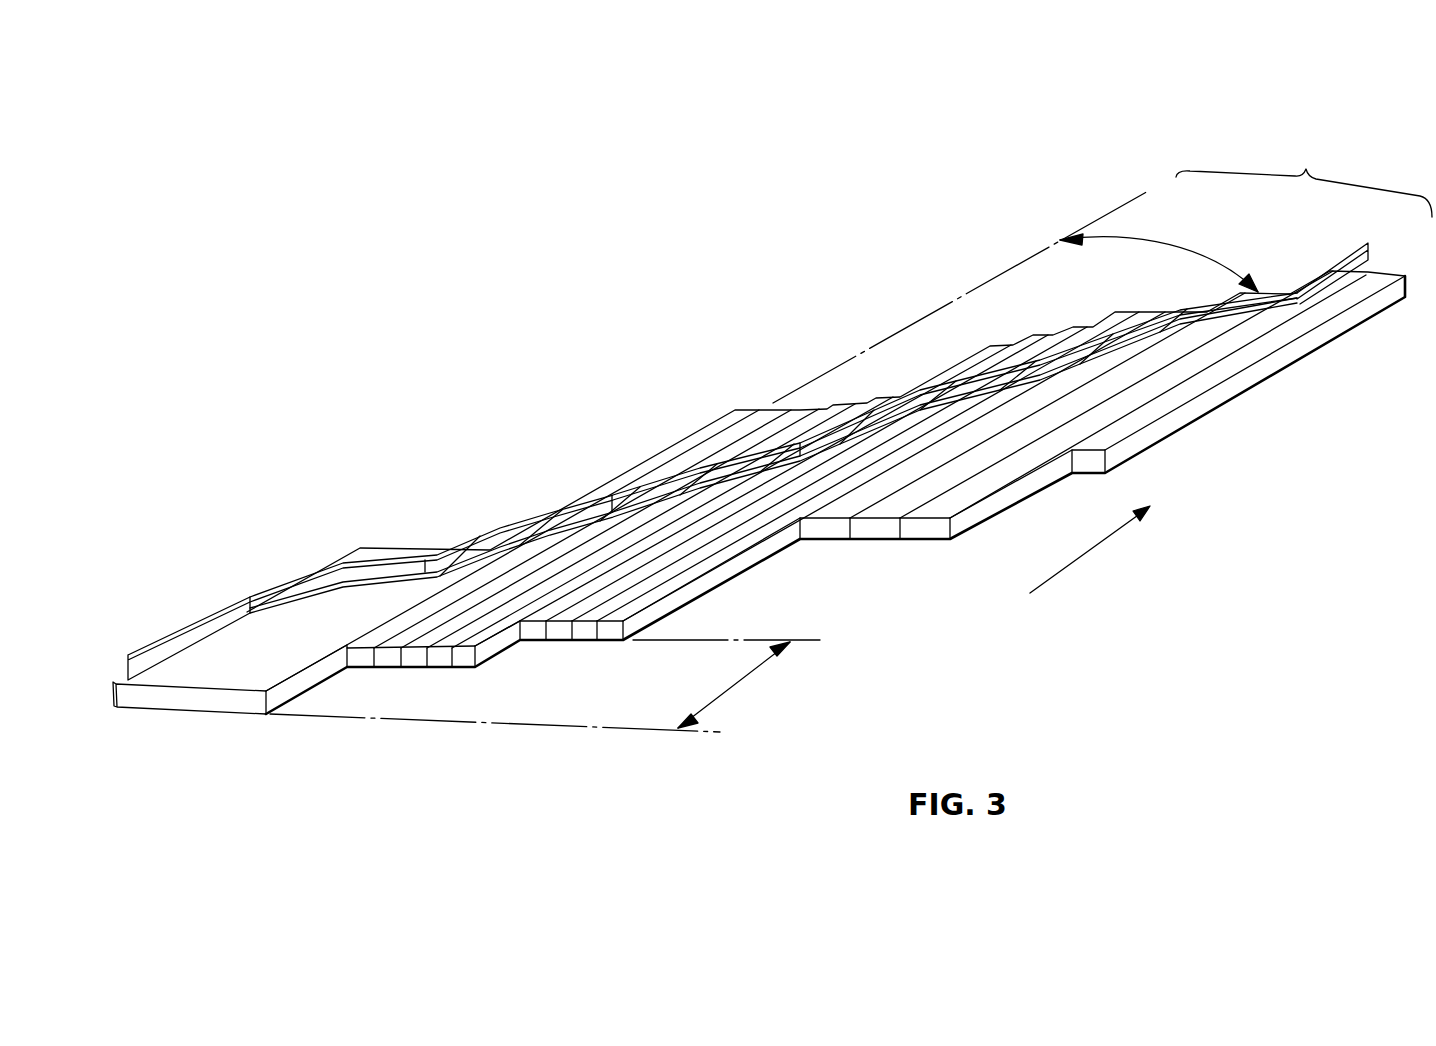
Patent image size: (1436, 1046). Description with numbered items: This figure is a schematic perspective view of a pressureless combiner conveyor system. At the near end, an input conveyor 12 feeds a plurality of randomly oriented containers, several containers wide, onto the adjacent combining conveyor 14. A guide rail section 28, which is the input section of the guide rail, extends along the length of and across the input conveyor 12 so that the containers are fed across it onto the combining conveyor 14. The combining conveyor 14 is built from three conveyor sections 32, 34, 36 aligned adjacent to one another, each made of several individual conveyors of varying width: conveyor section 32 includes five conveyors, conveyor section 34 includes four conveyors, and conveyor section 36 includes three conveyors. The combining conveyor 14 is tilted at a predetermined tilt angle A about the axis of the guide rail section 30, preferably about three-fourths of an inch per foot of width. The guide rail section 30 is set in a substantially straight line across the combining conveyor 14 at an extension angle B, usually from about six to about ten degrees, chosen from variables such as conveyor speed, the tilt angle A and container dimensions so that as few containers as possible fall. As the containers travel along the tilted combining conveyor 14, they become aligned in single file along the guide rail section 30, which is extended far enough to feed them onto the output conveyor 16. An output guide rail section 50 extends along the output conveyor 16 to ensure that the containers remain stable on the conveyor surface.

The input conveyor 12 is at (293, 646).
The combining conveyor 14 is at (1306, 169).
The output conveyor 16 is at (1227, 390).
The guide rail section 28 is at (290, 577).
The guide rail section 30 is at (922, 398).
The conveyor section 32 is at (463, 685).
The conveyor section 34 is at (617, 652).
The conveyor section 36 is at (944, 553).
The output guide rail section 50 is at (1321, 263).
The tilt angle A is at (752, 672).
The extension angle B is at (1162, 243).